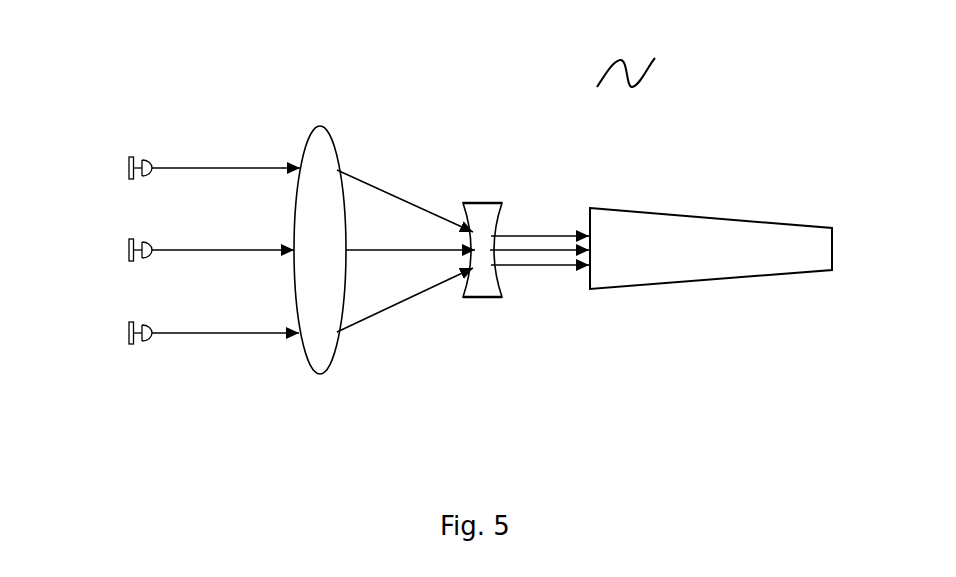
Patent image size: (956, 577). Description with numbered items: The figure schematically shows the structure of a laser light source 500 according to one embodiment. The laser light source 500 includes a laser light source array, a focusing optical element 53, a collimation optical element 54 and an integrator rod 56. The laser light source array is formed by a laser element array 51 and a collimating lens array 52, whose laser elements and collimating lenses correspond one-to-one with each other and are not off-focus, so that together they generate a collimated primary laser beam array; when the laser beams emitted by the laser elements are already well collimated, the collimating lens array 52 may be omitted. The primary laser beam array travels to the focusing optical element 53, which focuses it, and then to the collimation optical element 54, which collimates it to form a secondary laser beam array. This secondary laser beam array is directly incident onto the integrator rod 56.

The laser element array 51 is at (129, 170).
The collimating lens array 52 is at (146, 259).
The focusing optical element 53 is at (313, 137).
The collimation optical element 54 is at (482, 202).
The integrator rod 56 is at (713, 218).
The laser light source 500 is at (641, 52).